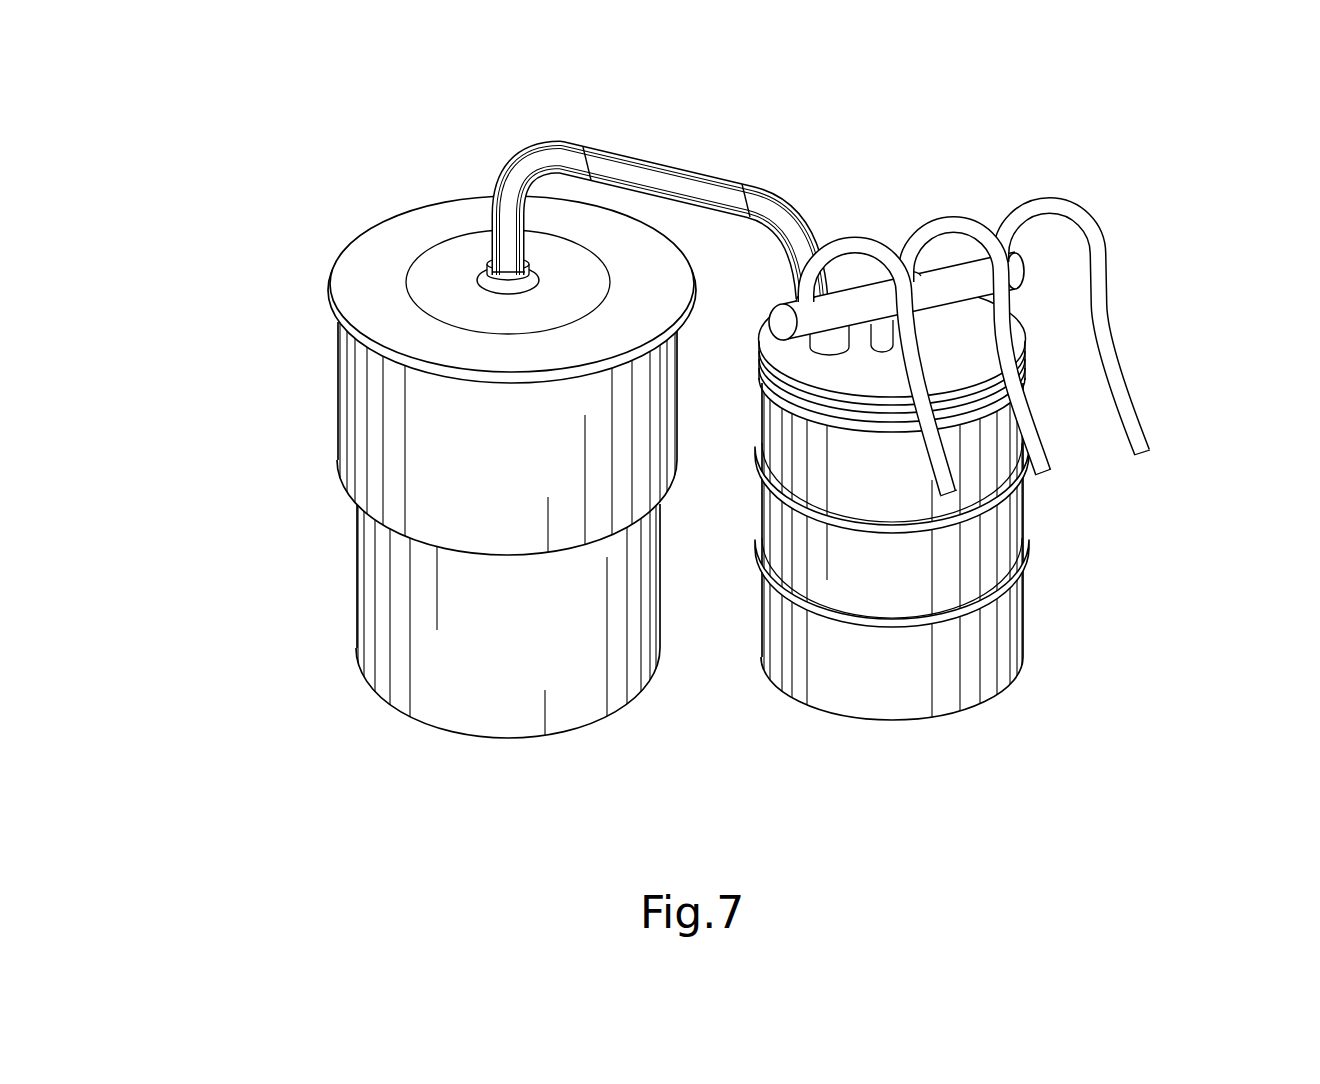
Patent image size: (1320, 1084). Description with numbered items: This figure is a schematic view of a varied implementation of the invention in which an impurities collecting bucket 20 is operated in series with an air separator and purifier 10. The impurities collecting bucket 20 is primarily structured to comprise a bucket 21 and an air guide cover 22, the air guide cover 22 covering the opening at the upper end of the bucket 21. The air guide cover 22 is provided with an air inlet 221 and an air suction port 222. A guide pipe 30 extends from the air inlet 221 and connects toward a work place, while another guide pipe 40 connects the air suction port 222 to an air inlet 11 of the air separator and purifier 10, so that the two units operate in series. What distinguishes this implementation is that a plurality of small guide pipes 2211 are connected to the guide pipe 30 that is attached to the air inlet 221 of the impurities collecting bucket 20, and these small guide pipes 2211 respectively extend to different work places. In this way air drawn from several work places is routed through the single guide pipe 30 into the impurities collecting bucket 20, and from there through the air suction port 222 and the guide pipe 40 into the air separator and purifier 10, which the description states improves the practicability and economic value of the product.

The air separator and purifier 10 is at (330, 599).
The air inlet 11 is at (507, 272).
The impurities collecting bucket 20 is at (953, 508).
The bucket 21 is at (793, 540).
The air guide cover 22 is at (838, 422).
The air inlet 221 is at (890, 345).
The air suction port 222 is at (836, 343).
The small guide pipe 2211 is at (1103, 320).
The guide pipe 30 is at (949, 264).
The guide pipe 40 is at (680, 167).